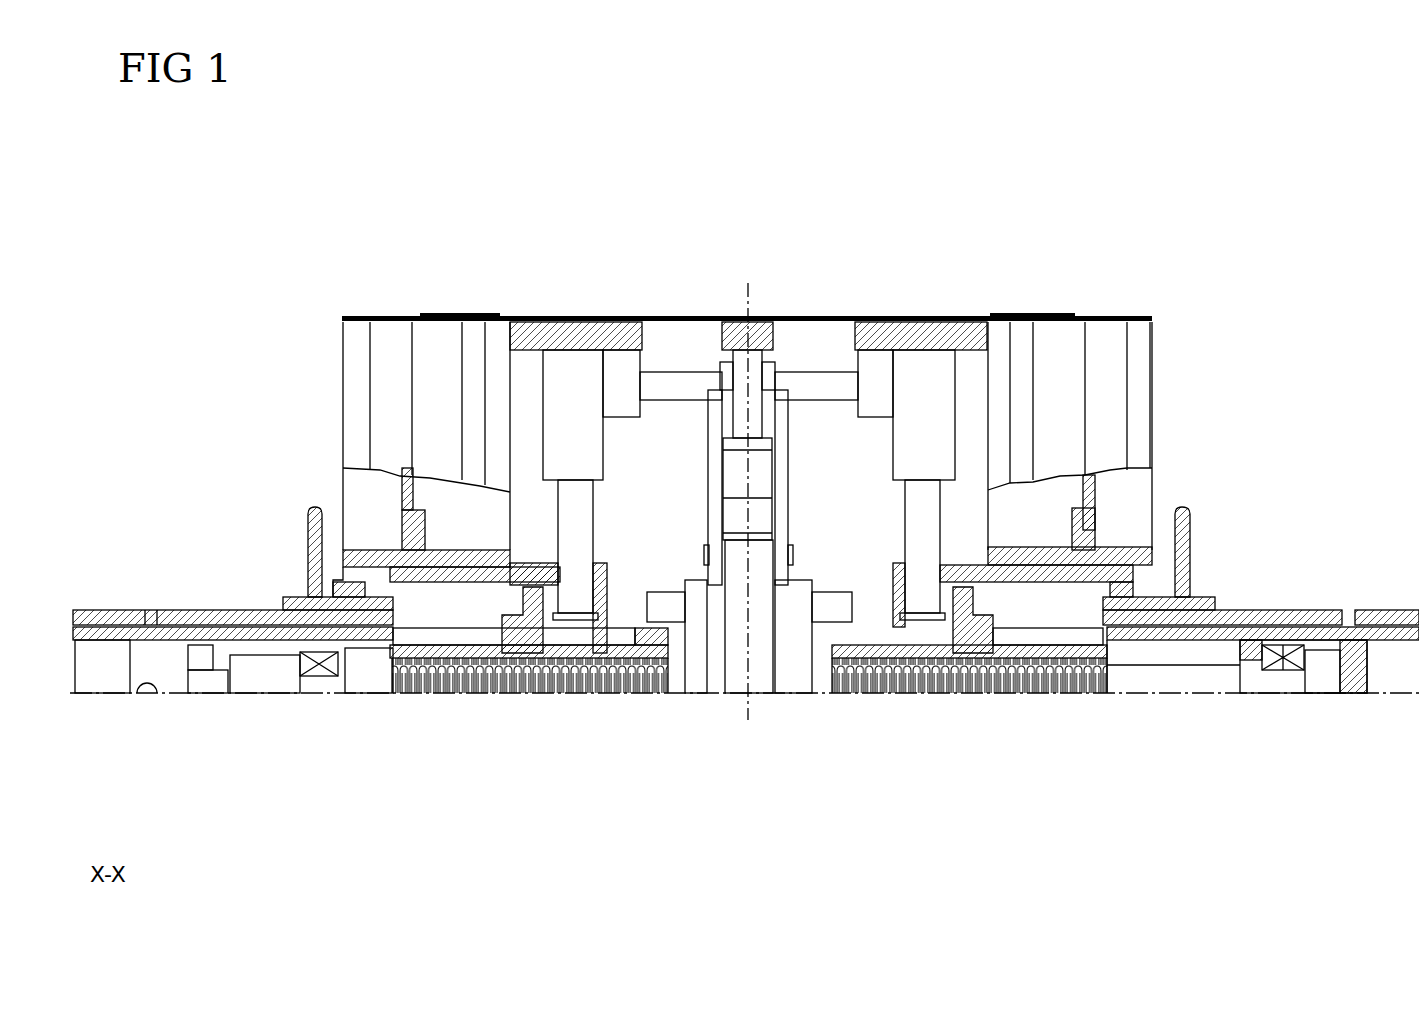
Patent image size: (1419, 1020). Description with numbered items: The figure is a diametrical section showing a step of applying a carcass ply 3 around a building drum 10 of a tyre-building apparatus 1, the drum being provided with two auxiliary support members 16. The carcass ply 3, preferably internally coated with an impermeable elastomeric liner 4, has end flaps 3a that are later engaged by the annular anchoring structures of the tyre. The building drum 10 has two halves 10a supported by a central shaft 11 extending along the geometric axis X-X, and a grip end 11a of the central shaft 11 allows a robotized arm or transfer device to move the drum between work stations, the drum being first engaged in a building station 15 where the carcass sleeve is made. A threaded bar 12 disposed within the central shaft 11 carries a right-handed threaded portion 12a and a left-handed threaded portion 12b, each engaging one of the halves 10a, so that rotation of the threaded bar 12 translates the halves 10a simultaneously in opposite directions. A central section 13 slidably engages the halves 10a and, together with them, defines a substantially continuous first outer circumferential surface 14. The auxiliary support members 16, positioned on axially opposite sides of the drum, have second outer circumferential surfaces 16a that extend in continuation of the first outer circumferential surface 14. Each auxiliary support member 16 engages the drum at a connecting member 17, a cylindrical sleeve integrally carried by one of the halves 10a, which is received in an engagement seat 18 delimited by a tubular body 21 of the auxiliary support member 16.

The apparatus 1 is at (1290, 144).
The carcass ply 3 is at (903, 318).
The end flaps 3a is at (400, 318).
The liner 4 is at (830, 318).
The building drum 10 is at (694, 705).
The halves 10a is at (528, 322).
The central shaft 11 is at (188, 608).
The grip end 11a is at (113, 608).
The threaded bar 12 is at (414, 700).
The threaded portion 12a is at (532, 690).
The threaded portion 12b is at (978, 690).
The central section 13 is at (733, 325).
The first outer circumferential surface 14 is at (572, 322).
The building station 15 is at (223, 309).
The auxiliary support members 16 is at (329, 371).
The second outer circumferential surfaces 16a is at (1153, 312).
The connecting members 17 is at (408, 575).
The engagement seat 18 is at (1053, 573).
The tubular body 21 is at (1068, 552).